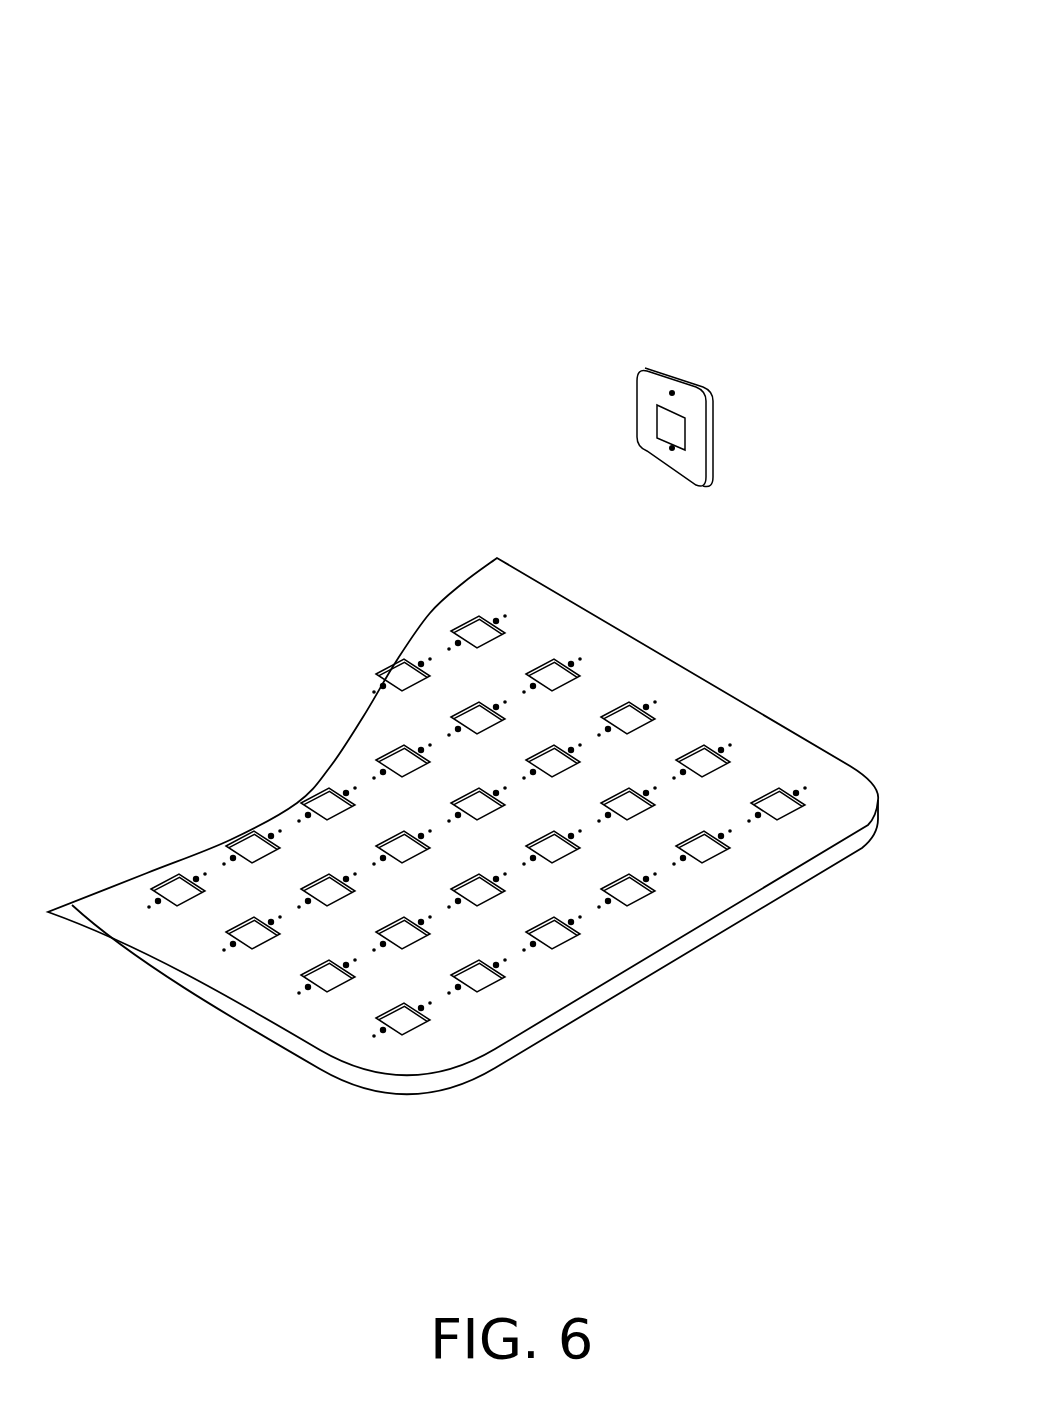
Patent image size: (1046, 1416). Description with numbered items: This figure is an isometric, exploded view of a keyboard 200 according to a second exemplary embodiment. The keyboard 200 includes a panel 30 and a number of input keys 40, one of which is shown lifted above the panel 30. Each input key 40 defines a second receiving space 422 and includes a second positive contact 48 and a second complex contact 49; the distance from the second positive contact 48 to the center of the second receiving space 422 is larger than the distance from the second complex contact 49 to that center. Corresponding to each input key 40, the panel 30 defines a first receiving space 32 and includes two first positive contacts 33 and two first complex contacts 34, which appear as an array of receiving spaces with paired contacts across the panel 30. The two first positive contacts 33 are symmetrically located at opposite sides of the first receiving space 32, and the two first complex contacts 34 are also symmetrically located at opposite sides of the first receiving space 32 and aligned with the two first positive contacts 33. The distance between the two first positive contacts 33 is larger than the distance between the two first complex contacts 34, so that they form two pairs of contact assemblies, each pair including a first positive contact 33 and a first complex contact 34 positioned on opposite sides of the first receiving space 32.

The keyboard 200 is at (343, 72).
The panel 30 is at (738, 911).
The first receiving space 32 is at (410, 1025).
The first positive contact 33 is at (375, 1037).
The first complex contact 34 is at (386, 1032).
The input key 40 is at (708, 447).
The second receiving space 422 is at (658, 408).
The second positive contact 48 is at (673, 392).
The second complex contact 49 is at (672, 450).